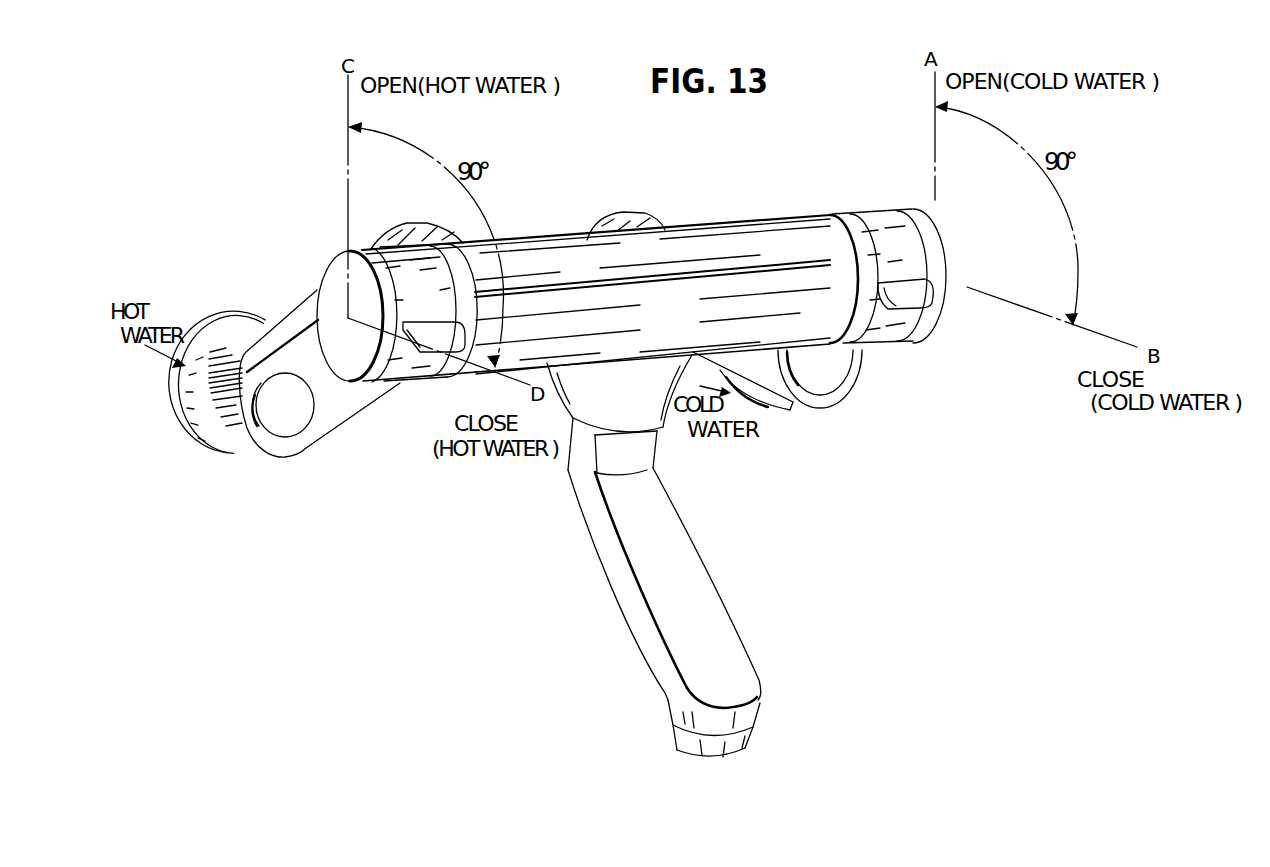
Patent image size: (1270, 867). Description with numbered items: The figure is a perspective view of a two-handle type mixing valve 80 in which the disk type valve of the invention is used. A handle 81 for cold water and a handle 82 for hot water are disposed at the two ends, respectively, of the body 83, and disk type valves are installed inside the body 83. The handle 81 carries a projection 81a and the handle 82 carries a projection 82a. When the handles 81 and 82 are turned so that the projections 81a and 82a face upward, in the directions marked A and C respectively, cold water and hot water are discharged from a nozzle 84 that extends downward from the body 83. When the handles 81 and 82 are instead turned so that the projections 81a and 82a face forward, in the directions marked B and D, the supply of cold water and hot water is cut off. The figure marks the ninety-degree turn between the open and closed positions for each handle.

The two-handle type mixing valve 80 is at (756, 207).
The handle for cold water 81 is at (887, 330).
The projection 81a is at (928, 302).
The handle for hot water 82 is at (396, 398).
The projection 82a is at (434, 319).
The body 83 is at (573, 240).
The nozzle 84 is at (712, 620).